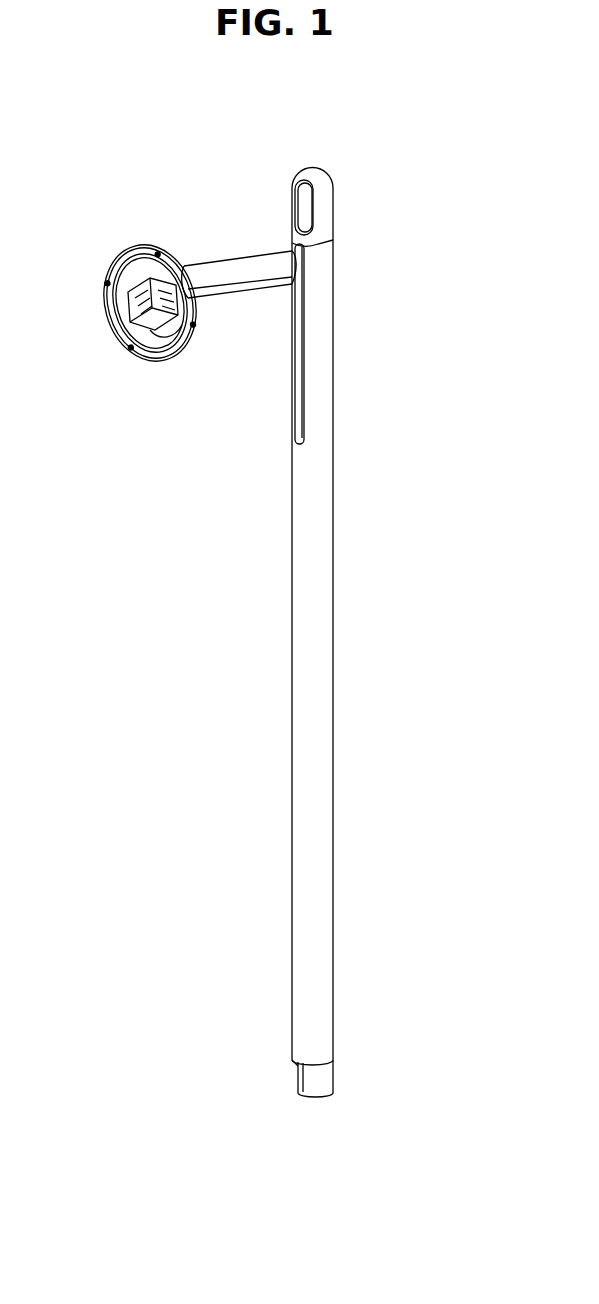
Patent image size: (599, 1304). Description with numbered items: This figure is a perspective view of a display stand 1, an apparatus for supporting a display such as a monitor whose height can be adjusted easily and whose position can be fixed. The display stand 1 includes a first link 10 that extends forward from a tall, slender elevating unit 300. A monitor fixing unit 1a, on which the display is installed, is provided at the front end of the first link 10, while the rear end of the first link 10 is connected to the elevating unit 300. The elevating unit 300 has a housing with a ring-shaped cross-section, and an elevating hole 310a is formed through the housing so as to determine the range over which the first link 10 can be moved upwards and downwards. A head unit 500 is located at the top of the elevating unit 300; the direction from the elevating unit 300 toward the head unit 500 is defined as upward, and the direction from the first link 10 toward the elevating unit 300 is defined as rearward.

The display stand 1 is at (66, 189).
The monitor fixing unit 1a is at (140, 368).
The first link 10 is at (236, 262).
The elevating unit 300 is at (378, 647).
The elevating hole 310a is at (300, 362).
The head unit 500 is at (357, 197).